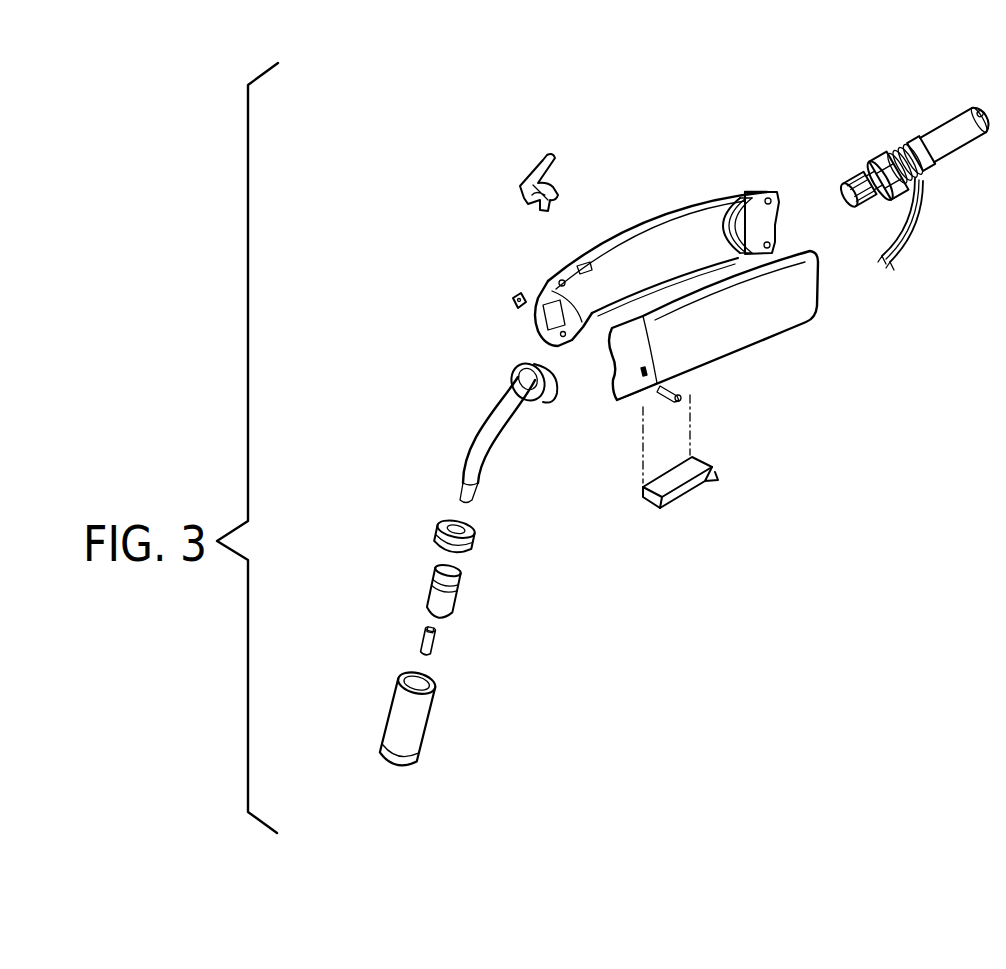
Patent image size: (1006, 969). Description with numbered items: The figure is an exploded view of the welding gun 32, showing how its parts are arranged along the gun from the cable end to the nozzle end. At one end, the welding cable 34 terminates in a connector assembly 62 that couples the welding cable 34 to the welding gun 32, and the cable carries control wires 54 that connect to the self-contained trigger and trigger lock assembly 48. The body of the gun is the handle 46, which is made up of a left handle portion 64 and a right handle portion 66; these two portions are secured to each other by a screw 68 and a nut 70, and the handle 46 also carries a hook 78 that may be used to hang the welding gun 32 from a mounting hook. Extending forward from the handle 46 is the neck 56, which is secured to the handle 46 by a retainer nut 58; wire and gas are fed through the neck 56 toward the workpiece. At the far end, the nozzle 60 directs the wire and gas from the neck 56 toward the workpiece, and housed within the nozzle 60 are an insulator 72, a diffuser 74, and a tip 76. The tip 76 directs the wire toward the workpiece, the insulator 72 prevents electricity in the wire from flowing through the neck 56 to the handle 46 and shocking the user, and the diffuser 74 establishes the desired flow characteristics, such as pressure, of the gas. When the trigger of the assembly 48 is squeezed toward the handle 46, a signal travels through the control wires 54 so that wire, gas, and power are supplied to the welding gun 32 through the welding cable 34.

The welding gun 32 is at (730, 153).
The welding cable 34 is at (951, 119).
The handle 46 is at (761, 193).
The self-contained trigger and trigger lock assembly 48 is at (660, 512).
The control wires 54 is at (897, 255).
The neck 56 is at (468, 468).
The retainer nut 58 is at (518, 366).
The nozzle 60 is at (385, 722).
The connector assembly 62 is at (842, 185).
The left handle portion 64 is at (757, 315).
The right handle portion 66 is at (670, 210).
The screw 68 is at (680, 395).
The nut 70 is at (511, 302).
The insulator 72 is at (470, 548).
The diffuser 74 is at (428, 607).
The tip 76 is at (437, 645).
The hook 78 is at (547, 156).